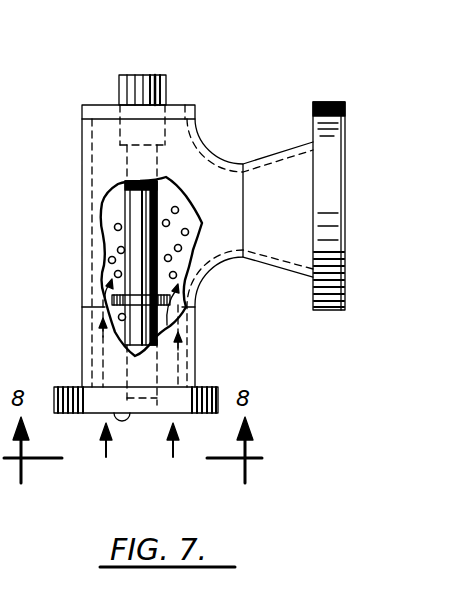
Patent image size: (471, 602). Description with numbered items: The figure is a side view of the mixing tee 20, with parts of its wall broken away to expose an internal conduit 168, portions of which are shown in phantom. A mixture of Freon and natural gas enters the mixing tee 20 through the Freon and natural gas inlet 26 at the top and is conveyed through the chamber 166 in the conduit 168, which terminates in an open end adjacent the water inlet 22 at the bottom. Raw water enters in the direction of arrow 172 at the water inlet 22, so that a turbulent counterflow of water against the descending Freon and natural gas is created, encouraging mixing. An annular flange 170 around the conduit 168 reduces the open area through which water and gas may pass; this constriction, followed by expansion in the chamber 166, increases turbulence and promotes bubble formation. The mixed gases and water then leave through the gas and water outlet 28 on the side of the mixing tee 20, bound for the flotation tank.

The mixing tee 20 is at (206, 52).
The water inlet 22 is at (145, 413).
The Freon and natural gas inlet 26 is at (137, 75).
The gas and water outlet 28 is at (365, 168).
The chamber 166 is at (117, 205).
The conduit 168 is at (136, 238).
The annular flange 170 is at (113, 316).
The arrow 172 is at (106, 457).